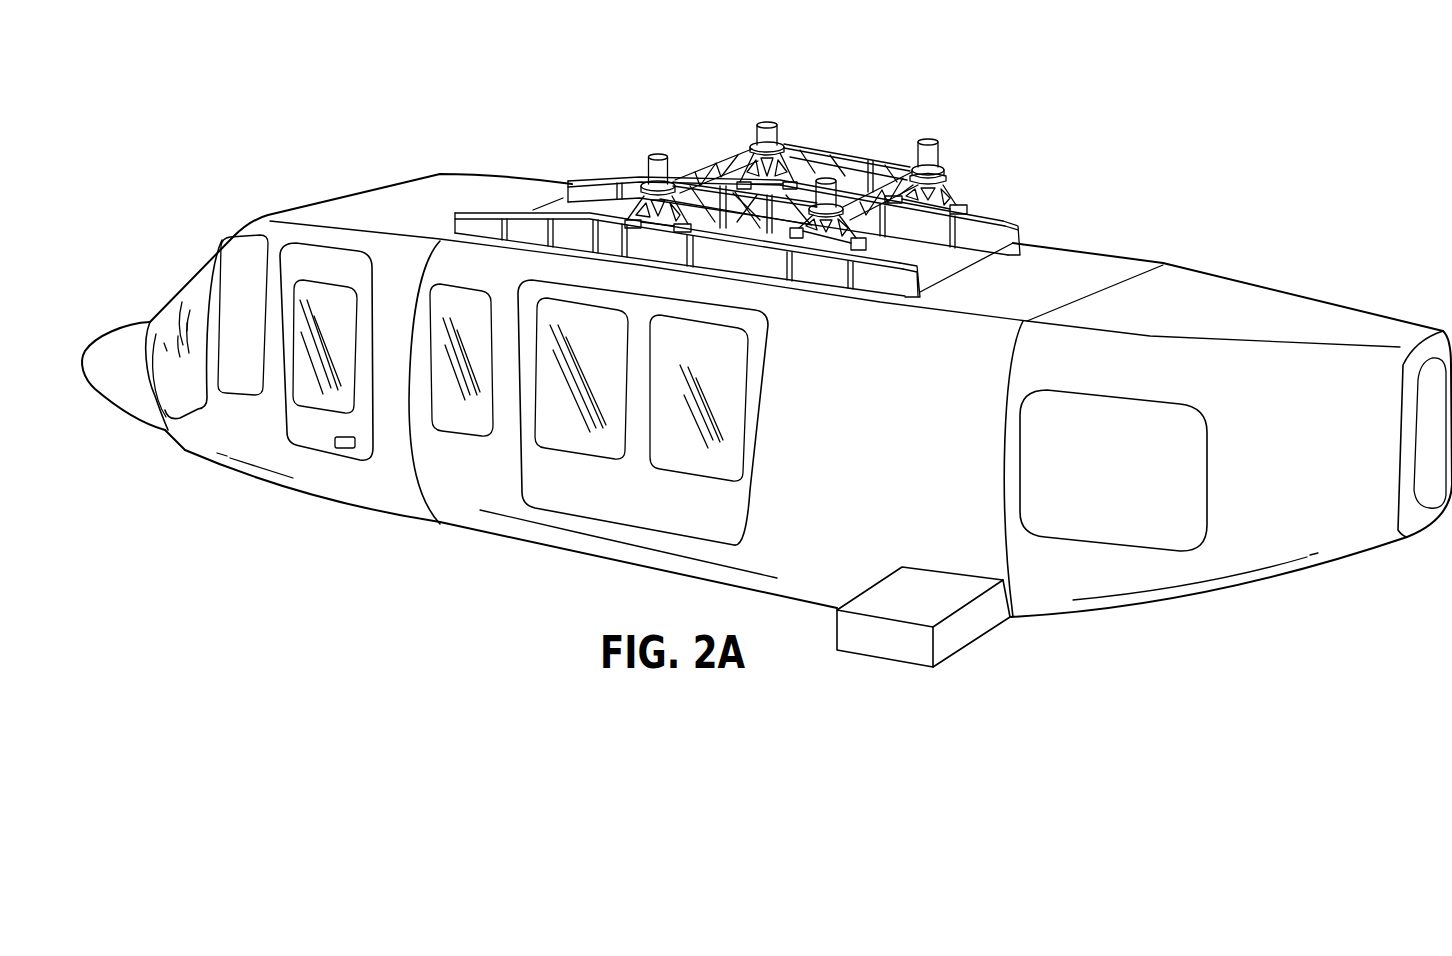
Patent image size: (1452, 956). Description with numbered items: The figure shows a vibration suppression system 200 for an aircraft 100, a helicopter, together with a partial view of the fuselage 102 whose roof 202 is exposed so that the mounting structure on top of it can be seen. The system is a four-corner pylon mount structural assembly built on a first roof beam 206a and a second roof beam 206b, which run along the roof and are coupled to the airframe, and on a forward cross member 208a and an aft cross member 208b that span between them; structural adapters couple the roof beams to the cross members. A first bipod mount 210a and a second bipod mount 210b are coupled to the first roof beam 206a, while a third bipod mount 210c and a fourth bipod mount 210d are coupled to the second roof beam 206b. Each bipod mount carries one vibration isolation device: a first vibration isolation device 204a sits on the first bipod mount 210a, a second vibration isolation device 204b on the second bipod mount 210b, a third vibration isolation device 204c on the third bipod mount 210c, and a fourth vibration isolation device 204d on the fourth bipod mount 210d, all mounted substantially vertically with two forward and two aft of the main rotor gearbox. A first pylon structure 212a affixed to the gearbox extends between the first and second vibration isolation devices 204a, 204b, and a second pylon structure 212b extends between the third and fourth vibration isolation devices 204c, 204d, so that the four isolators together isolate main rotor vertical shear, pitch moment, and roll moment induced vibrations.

The aircraft 100 is at (1140, 100).
The fuselage 102 is at (449, 512).
The vibration suppression system 200 is at (930, 63).
The roof 202 is at (1062, 260).
The first vibration isolation device 204a is at (767, 122).
The second vibration isolation device 204b is at (926, 139).
The third vibration isolation device 204c is at (656, 155).
The fourth vibration isolation device 204d is at (836, 178).
The first roof beam 206a is at (593, 180).
The second roof beam 206b is at (495, 212).
The forward cross member 208a is at (717, 205).
The aft cross member 208b is at (907, 246).
The first bipod mount 210a is at (742, 160).
The second bipod mount 210b is at (950, 192).
The third bipod mount 210c is at (628, 210).
The fourth bipod mount 210d is at (830, 248).
The first pylon structure 212a is at (800, 143).
The second pylon structure 212b is at (702, 208).